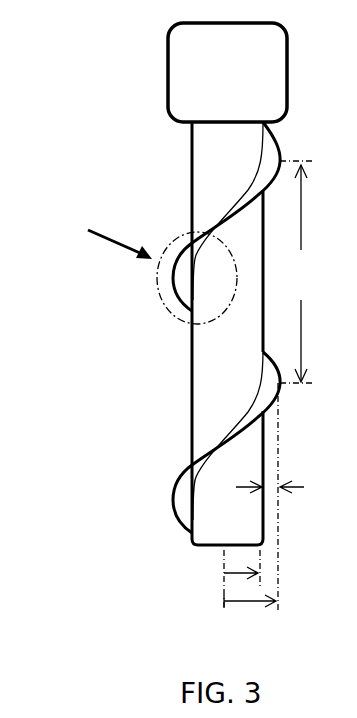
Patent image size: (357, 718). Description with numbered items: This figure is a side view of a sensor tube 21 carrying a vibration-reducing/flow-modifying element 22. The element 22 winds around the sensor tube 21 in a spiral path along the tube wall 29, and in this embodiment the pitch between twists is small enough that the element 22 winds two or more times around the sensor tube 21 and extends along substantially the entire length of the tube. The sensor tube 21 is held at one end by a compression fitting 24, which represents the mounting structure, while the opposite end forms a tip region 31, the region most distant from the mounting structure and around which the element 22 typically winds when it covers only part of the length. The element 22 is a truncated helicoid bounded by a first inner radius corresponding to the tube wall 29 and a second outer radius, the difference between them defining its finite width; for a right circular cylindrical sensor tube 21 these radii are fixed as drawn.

The sensor tube 21 is at (192, 162).
The vibration-reducing/flow-modifying element 22 is at (177, 479).
The compression fitting 24 is at (168, 60).
The tube wall 29 is at (191, 383).
The tip region 31 is at (171, 325).